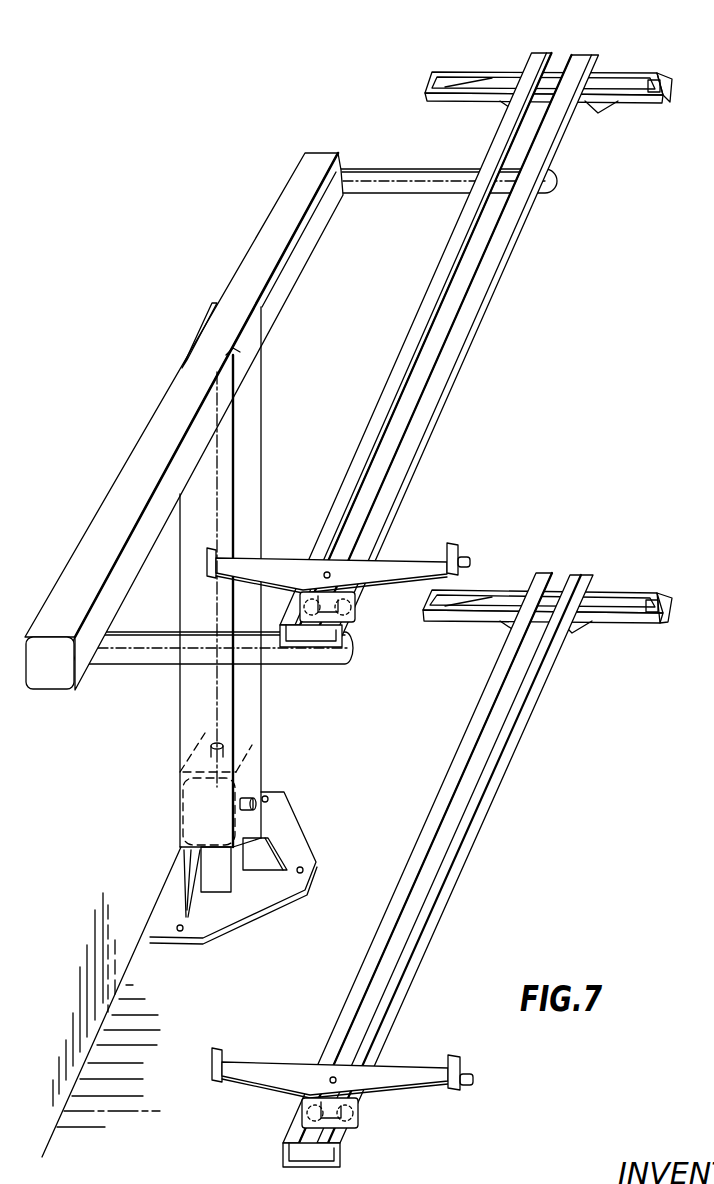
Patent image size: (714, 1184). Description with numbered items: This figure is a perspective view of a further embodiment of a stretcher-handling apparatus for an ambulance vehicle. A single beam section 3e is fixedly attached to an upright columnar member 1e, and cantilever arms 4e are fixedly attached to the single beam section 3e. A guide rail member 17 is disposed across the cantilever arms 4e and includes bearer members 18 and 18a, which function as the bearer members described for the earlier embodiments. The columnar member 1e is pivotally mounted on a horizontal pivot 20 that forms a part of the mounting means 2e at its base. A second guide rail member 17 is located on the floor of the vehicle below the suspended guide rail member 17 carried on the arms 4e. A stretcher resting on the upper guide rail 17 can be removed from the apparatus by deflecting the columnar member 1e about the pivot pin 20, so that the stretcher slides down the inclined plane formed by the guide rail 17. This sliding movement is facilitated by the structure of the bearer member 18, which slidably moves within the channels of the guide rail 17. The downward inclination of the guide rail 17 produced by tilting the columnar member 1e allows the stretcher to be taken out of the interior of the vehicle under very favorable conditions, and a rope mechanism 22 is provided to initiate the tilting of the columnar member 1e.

The columnar member 1e is at (250, 455).
The mounting means 2e is at (293, 853).
The single beam section 3e is at (130, 492).
The cantilever arms 4e is at (417, 186).
The guide rail member 17 is at (483, 282).
The bearer member 18 is at (286, 570).
The bearer member 18a is at (636, 600).
The horizontal pivot 20 is at (248, 800).
The rope mechanism 22 is at (217, 470).